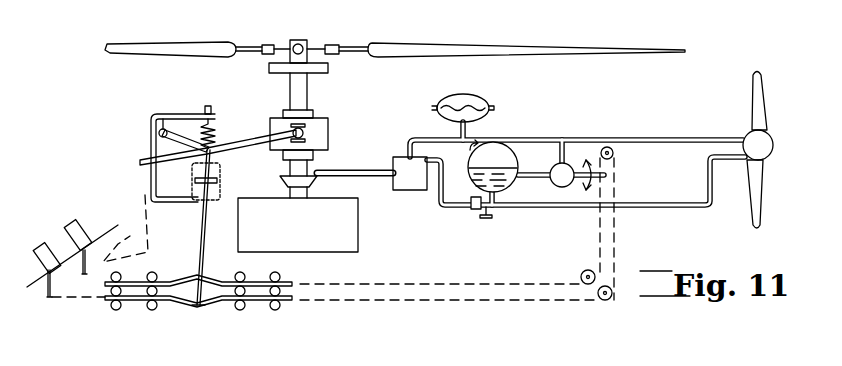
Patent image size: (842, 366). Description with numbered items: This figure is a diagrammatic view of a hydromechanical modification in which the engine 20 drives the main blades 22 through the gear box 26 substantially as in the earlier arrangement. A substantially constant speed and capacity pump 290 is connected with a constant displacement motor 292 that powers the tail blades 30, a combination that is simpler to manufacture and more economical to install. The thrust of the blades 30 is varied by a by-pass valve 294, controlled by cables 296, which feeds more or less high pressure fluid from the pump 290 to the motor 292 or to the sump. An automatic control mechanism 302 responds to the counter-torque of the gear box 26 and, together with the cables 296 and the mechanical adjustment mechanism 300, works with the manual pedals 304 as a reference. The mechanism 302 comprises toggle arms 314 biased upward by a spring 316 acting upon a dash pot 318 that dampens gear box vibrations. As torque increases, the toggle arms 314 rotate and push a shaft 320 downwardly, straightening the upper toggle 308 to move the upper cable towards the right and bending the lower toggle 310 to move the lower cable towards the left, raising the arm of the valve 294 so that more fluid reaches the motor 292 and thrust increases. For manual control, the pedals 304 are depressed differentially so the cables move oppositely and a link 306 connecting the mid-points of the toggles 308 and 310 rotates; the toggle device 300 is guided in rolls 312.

The engine 20 is at (310, 241).
The blades 22 is at (197, 43).
The gear box 26 is at (328, 130).
The blades 30 is at (756, 150).
The pump 290 is at (403, 190).
The motor 292 is at (748, 130).
The by-pass valve 294 is at (565, 190).
The cables 296 is at (614, 222).
The mechanical adjustment mechanism 300 is at (157, 322).
The automatic control mechanism 302 is at (137, 135).
The manual pedals 304 is at (45, 250).
The link 306 is at (238, 310).
The upper toggle 308 is at (198, 265).
The lower toggle 310 is at (203, 310).
The rolls 312 is at (150, 310).
The toggle arms 314 is at (166, 151).
The spring 316 is at (230, 104).
The dash pot 318 is at (221, 184).
The shaft 320 is at (199, 248).